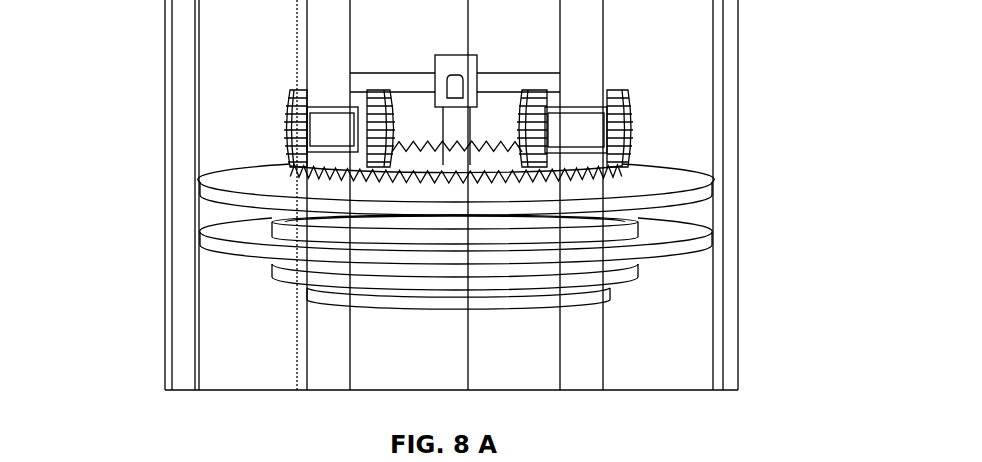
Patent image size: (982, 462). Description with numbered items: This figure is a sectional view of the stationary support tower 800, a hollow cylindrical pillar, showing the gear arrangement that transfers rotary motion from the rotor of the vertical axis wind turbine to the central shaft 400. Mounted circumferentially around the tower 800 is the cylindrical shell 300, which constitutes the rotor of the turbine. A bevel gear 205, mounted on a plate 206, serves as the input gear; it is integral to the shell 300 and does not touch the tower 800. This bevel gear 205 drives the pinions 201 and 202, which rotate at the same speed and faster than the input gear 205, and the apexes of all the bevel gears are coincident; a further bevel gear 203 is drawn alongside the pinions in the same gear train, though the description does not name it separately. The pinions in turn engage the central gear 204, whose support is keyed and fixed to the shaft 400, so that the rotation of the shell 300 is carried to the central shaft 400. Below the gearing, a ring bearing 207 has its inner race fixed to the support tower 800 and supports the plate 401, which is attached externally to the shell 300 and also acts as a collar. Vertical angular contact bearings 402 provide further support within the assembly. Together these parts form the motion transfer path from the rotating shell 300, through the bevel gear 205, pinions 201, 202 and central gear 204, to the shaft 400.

The pinion 201 is at (545, 130).
The pinion 202 is at (300, 127).
The inner bevel gear 203 is at (363, 123).
The central gear 204 is at (668, 165).
The bevel gear 205 is at (600, 182).
The plate 206 is at (470, 203).
The ring bearing 207 is at (617, 233).
The cylindrical shell 300 is at (165, 307).
The central shaft 400 is at (455, 357).
The plate 401 is at (610, 262).
The vertical angular contact bearing 402 is at (545, 82).
The support tower 800 is at (603, 333).